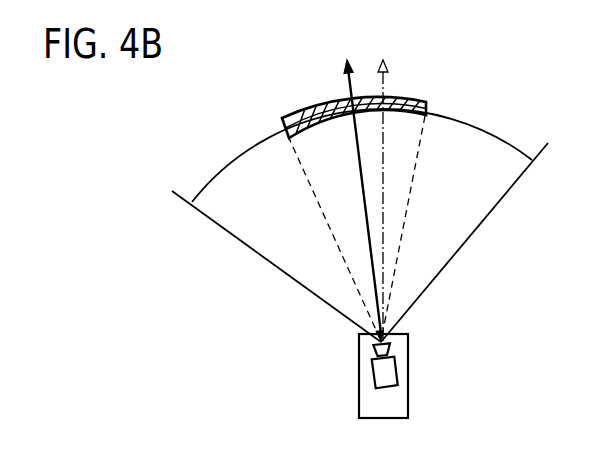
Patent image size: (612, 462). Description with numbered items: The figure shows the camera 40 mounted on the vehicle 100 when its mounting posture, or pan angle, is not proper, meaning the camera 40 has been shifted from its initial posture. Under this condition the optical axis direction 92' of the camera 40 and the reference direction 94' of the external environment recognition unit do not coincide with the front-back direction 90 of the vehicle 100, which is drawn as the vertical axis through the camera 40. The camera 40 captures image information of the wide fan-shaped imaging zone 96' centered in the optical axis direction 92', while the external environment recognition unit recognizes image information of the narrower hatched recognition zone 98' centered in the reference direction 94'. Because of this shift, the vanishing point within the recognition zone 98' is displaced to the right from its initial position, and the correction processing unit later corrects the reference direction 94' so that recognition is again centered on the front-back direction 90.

The imaging zone 96' is at (360, 225).
The recognition zone 98' is at (354, 196).
The front-back direction 90 is at (386, 82).
The optical axis direction 92' is at (391, 176).
The reference direction 94' is at (363, 200).
The vehicle 100 is at (359, 368).
The camera 40 is at (394, 373).